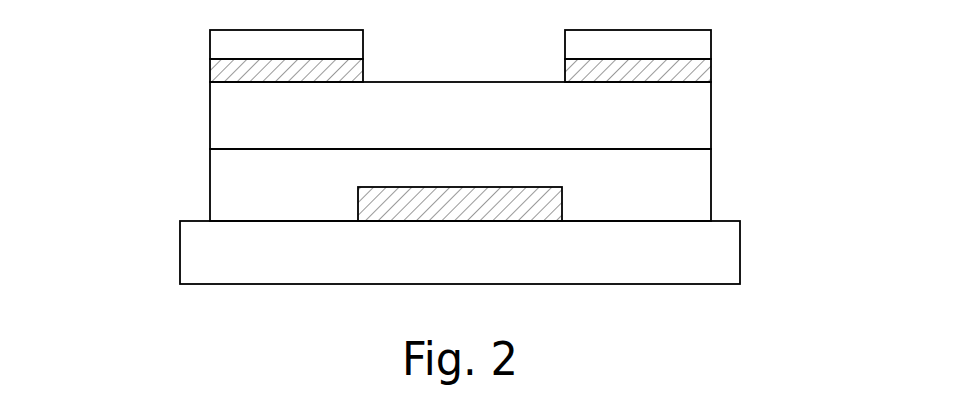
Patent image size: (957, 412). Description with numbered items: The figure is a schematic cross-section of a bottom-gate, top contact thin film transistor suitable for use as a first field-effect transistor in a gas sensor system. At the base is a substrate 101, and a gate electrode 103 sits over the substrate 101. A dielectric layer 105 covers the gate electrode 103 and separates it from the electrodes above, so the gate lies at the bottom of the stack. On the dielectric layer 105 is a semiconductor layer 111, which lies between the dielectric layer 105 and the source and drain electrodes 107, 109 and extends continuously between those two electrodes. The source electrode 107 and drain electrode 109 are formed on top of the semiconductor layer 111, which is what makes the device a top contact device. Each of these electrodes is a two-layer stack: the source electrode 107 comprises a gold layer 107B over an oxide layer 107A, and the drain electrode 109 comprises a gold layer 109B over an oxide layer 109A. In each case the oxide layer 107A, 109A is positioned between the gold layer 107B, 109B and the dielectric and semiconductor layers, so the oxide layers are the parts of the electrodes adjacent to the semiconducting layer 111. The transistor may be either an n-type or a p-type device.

The substrate 101 is at (752, 257).
The gate electrode 103 is at (488, 232).
The dielectric layer 105 is at (722, 197).
The source electrode 107 is at (189, 66).
The oxide layer 107A is at (199, 73).
The gold layer 107B is at (199, 38).
The drain electrode 109 is at (744, 65).
The oxide layer 109A is at (722, 73).
The gold layer 109B is at (722, 38).
The semiconductor layer 111 is at (722, 127).